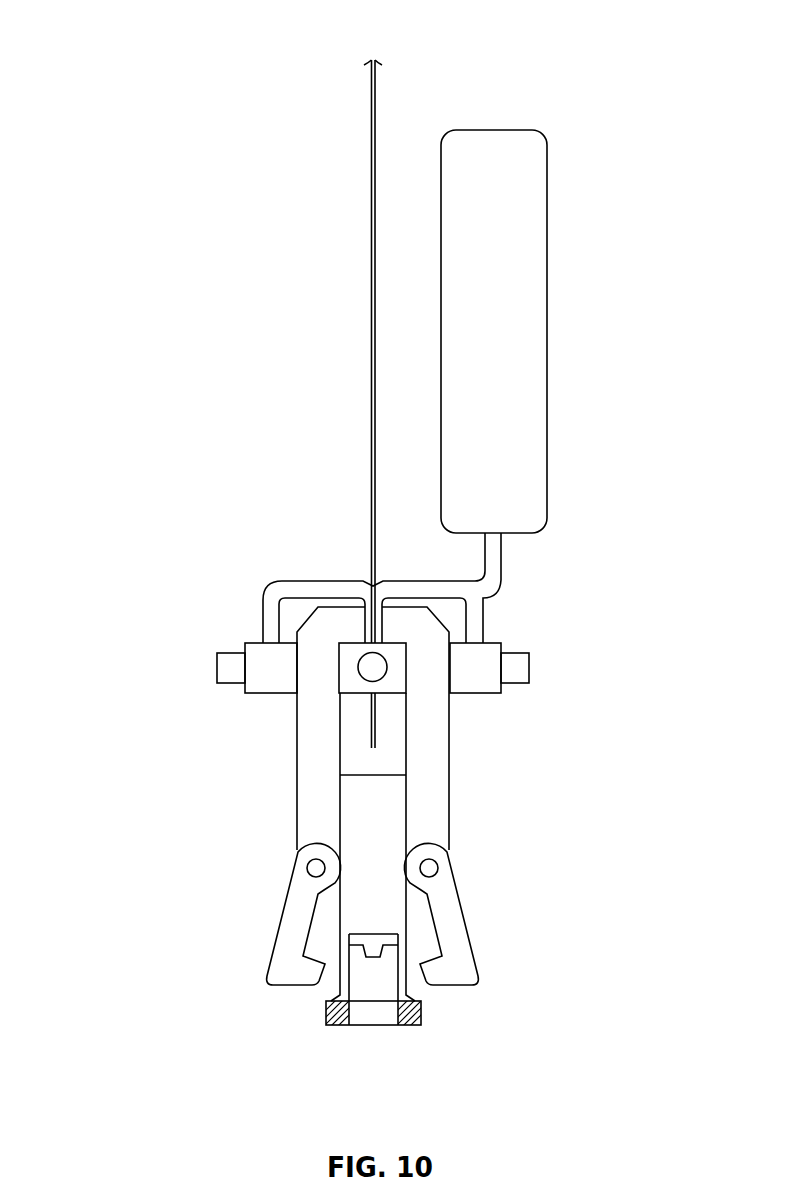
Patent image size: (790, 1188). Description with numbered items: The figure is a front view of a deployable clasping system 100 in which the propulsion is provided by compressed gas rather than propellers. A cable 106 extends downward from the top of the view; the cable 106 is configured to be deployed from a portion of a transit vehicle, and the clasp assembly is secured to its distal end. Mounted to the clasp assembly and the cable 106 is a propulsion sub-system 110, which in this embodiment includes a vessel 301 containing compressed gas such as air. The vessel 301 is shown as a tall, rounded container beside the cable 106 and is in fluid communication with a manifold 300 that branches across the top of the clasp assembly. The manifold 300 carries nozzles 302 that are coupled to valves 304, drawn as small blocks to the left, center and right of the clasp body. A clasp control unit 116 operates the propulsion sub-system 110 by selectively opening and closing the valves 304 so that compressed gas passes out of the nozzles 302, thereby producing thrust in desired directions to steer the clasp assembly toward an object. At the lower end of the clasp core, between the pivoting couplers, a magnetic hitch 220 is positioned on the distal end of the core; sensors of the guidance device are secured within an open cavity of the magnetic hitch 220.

The deployable clasping system 100 is at (158, 315).
The cable 106 is at (370, 218).
The propulsion sub-system 110 is at (585, 477).
The clasp control unit 116 is at (397, 940).
The magnetic hitch 220 is at (326, 1010).
The manifold 300 is at (499, 590).
The vessel 301 is at (548, 282).
The nozzles 302 is at (217, 668).
The valves 304 is at (270, 695).